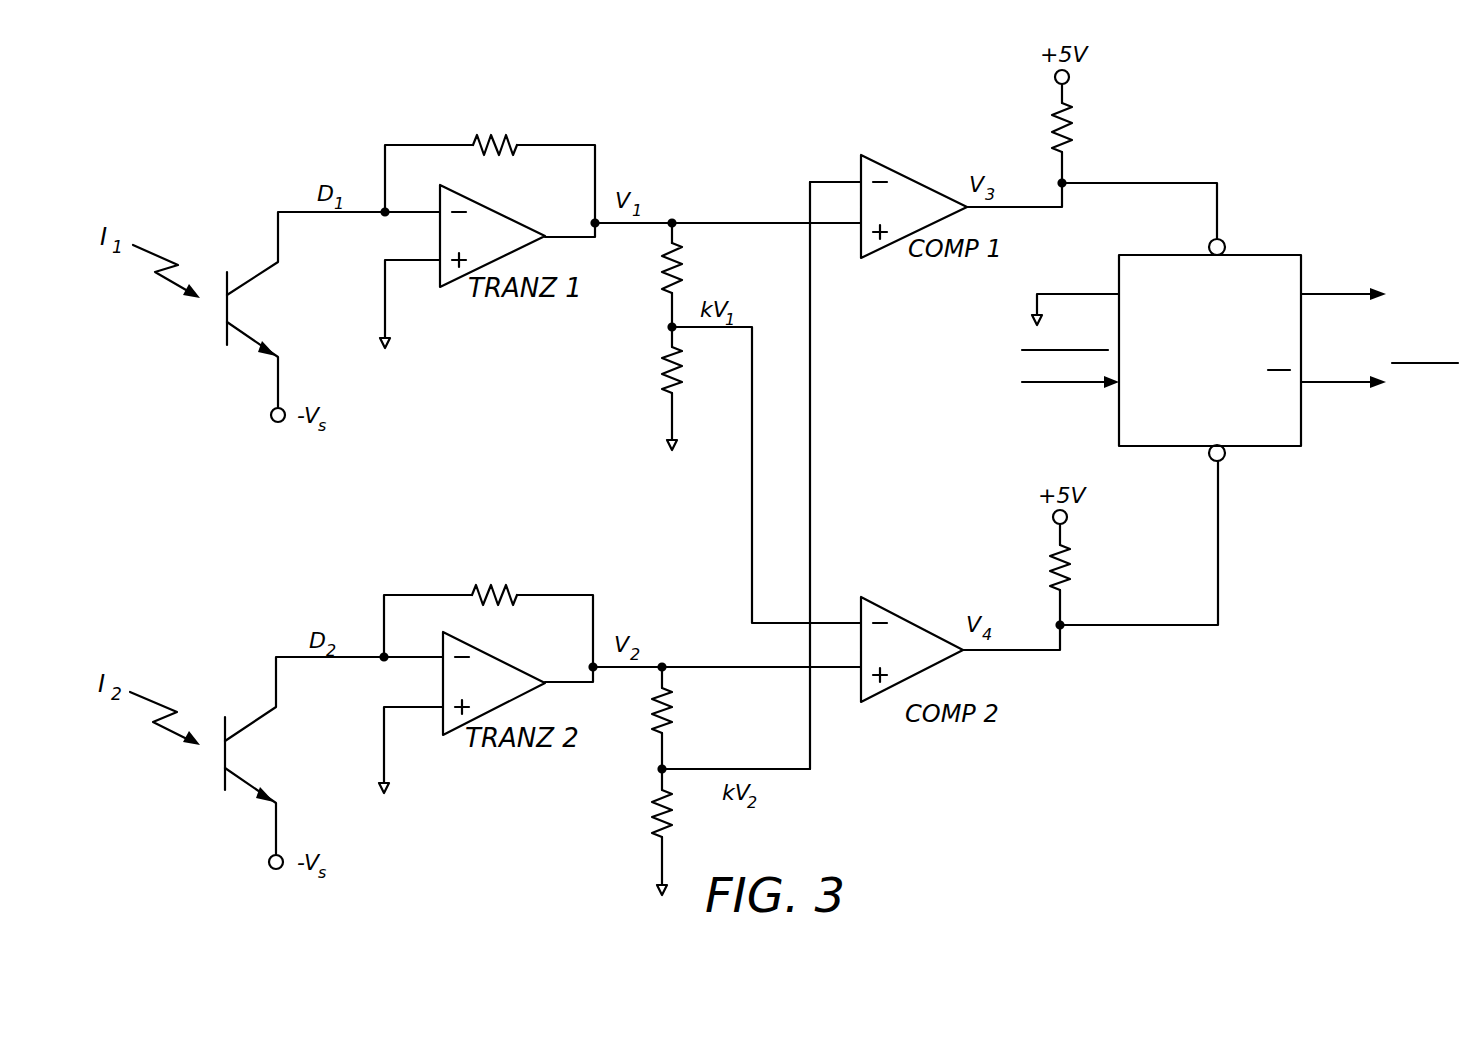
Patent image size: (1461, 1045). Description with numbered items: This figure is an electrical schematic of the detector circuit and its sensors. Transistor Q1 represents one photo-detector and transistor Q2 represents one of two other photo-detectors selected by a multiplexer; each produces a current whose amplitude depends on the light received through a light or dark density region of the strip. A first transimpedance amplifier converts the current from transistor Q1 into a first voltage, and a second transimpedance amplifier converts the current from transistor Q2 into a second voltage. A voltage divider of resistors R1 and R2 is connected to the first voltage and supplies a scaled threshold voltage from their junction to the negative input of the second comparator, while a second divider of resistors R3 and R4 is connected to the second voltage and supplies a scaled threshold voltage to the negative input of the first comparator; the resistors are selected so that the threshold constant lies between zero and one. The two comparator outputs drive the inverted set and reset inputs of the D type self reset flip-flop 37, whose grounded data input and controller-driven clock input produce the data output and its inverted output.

The D type self reset flip-flop 37 is at (1301, 255).
The transistor Q1 is at (306, 317).
The transistor Q2 is at (304, 763).
The resistor R1 is at (652, 275).
The resistor R2 is at (652, 388).
The resistor R3 is at (642, 718).
The resistor R4 is at (642, 832).